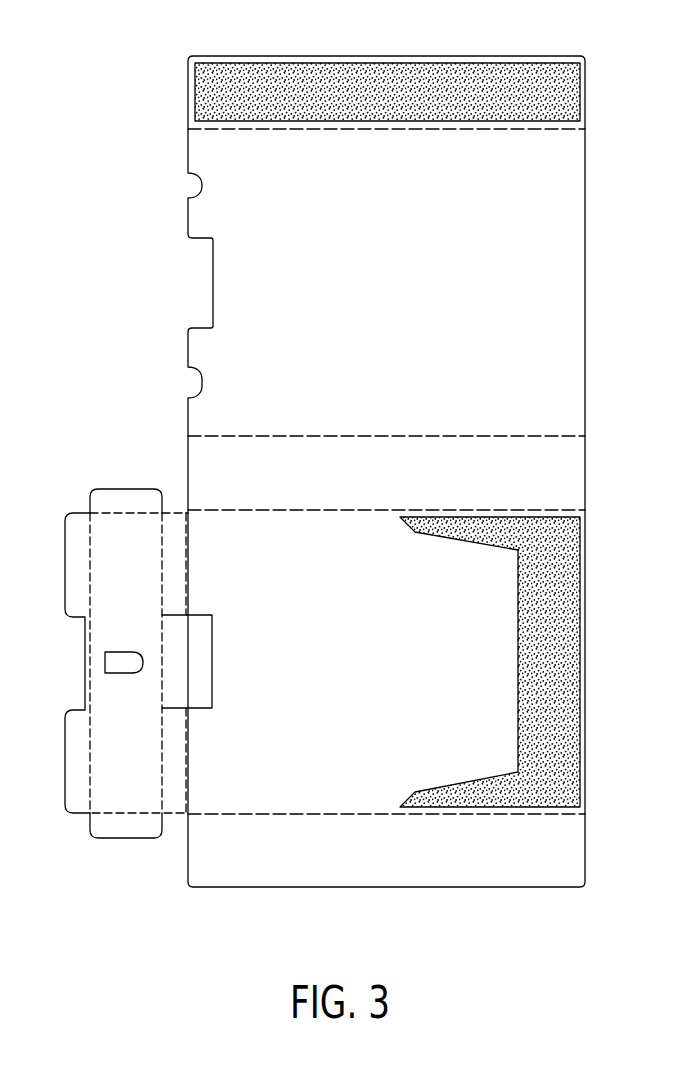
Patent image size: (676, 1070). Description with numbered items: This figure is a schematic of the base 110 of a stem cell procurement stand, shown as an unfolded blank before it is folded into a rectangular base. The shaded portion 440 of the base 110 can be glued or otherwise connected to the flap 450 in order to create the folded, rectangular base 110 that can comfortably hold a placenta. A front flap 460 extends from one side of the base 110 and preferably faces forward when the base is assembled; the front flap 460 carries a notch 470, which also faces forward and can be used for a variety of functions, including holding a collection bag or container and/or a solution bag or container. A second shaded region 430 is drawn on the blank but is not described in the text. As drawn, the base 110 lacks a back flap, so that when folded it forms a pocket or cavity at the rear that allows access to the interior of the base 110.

The base 110 is at (124, 199).
The shaded portion 440 is at (540, 72).
The adhesive region 430 is at (568, 634).
The flap 450 is at (475, 870).
The front flap 460 is at (120, 671).
The notch 470 is at (104, 659).